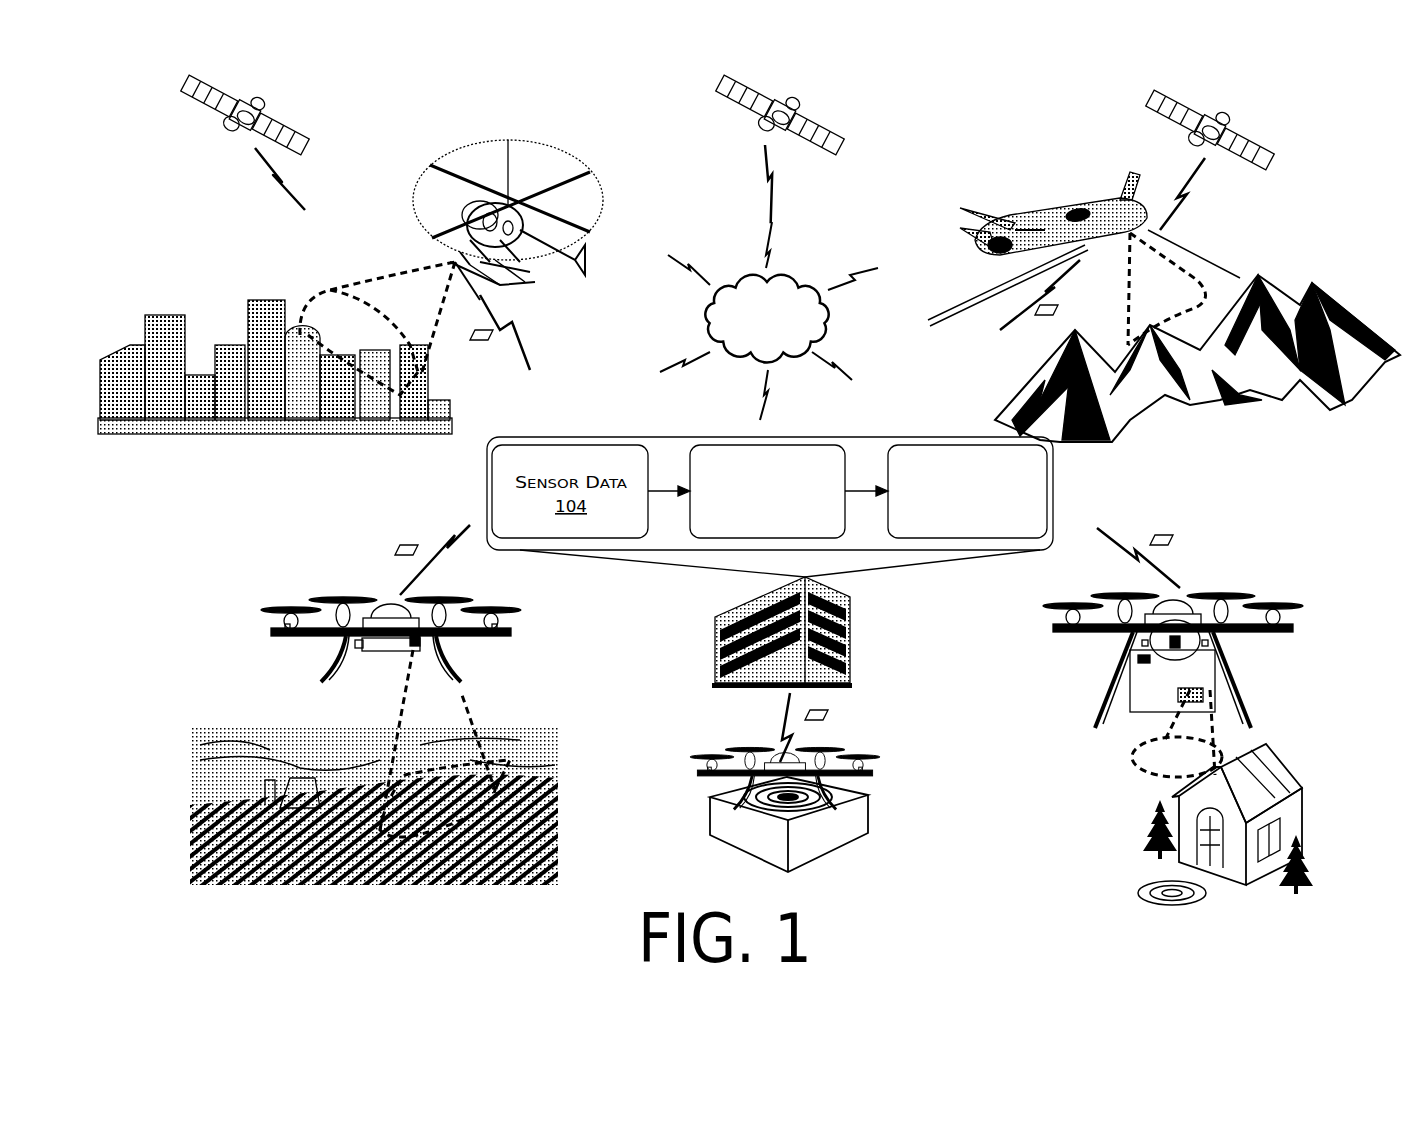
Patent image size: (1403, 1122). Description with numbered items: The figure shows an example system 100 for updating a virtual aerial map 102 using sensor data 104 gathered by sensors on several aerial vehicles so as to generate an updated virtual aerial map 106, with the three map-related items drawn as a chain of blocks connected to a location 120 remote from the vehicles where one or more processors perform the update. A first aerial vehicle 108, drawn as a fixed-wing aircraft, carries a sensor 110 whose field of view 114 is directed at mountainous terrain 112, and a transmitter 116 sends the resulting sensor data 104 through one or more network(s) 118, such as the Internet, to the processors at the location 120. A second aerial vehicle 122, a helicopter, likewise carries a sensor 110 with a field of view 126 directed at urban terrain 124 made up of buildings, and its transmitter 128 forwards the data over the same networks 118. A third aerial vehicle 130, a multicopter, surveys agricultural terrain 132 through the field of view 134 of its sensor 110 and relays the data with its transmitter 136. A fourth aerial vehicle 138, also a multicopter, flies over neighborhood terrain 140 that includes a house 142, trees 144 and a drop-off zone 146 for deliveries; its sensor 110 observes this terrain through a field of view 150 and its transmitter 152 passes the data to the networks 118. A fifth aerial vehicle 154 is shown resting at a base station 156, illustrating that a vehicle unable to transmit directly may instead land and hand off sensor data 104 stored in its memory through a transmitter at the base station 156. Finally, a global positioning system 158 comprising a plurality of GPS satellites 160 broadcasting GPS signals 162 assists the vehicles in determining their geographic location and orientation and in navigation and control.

The system 100 is at (212, 72).
The virtual aerial map 102 is at (746, 491).
The sensor data 104 is at (485, 340).
The updated virtual aerial map 106 is at (946, 491).
The first aerial vehicle 108 is at (1068, 205).
The sensor 110 is at (452, 280).
The mountainous terrain 112 is at (1231, 283).
The field of view 114 is at (1122, 303).
The transmitter 116 is at (1005, 258).
The network(s) 118 is at (769, 321).
The location 120 is at (720, 625).
The second aerial vehicle 122 is at (510, 142).
The urban terrain 124 is at (240, 298).
The field of view 126 is at (370, 270).
The transmitter 128 is at (505, 285).
The third aerial vehicle 130 is at (393, 605).
The agricultural terrain 132 is at (293, 728).
The field of view 134 is at (475, 700).
The transmitter 136 is at (391, 652).
The fourth aerial vehicle 138 is at (1173, 605).
The neighborhood terrain 140 is at (1278, 750).
The house 142 is at (1290, 785).
The trees 144 is at (1160, 695).
The drop-off zone 146 is at (1165, 888).
The field of view 150 is at (1145, 728).
The transmitter 152 is at (1148, 660).
The fifth aerial vehicle 154 is at (783, 755).
The base station 156 is at (858, 820).
The global positioning system 158 is at (660, 78).
The GPS satellites 160 is at (268, 102).
The GPS signals 162 is at (292, 178).